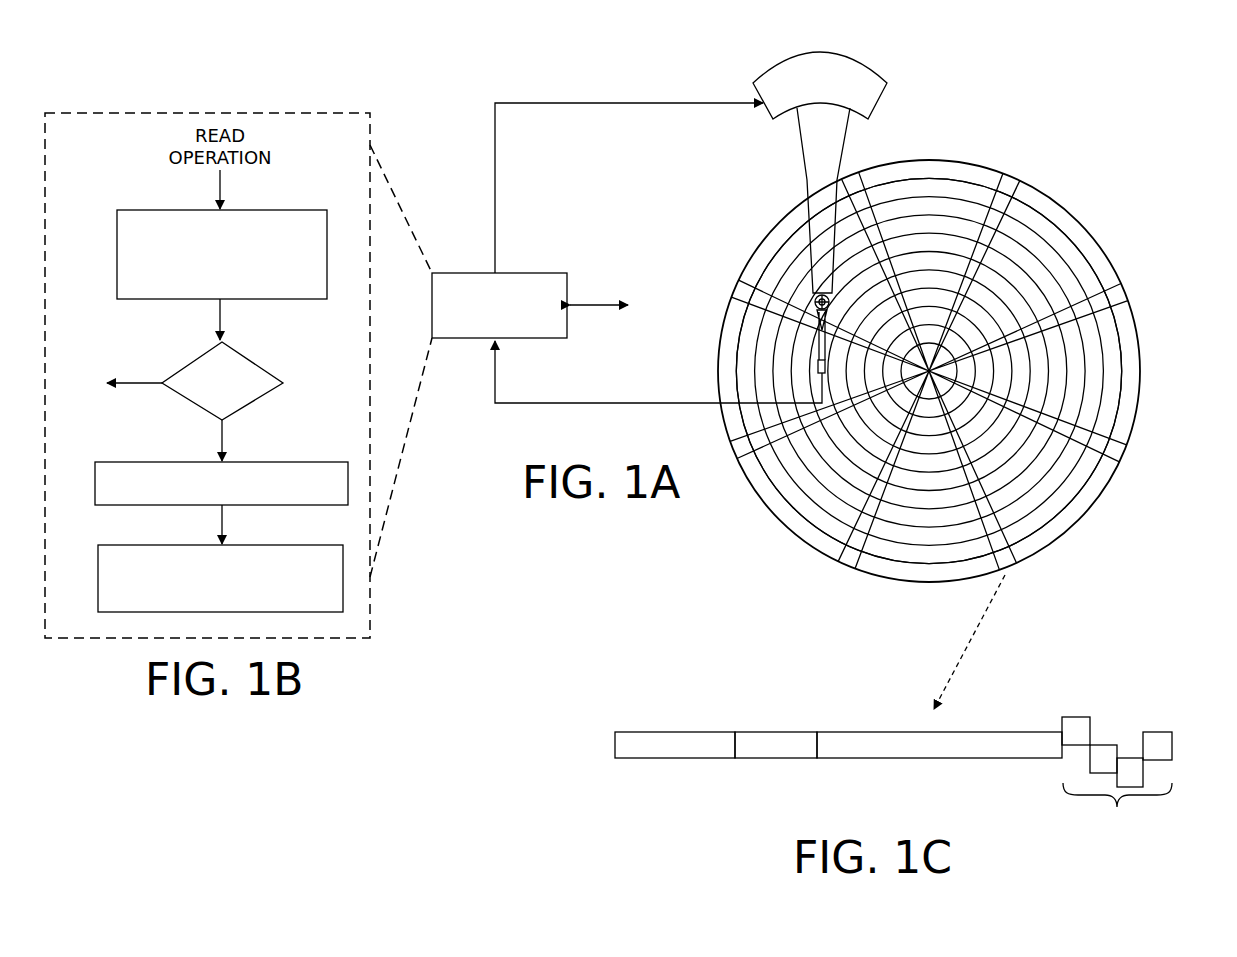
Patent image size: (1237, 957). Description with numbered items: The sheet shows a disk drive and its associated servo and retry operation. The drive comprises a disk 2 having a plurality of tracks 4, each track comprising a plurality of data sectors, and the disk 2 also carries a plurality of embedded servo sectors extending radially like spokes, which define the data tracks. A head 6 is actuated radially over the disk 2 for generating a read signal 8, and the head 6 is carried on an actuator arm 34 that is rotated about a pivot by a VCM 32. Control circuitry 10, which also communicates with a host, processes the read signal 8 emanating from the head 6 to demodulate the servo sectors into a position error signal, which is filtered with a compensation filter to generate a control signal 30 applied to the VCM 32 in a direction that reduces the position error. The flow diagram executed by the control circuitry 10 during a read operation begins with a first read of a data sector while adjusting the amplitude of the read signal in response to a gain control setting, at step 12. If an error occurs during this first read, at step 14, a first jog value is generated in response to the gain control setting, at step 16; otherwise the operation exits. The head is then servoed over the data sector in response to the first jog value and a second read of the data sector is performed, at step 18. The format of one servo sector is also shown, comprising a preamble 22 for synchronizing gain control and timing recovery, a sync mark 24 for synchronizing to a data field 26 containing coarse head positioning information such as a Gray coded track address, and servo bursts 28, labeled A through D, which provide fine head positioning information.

In FIG. 1A, the disk 2 is at (1077, 206).
In FIG. 1A, the tracks 4 is at (930, 185).
In FIG. 1A, the head 6 is at (813, 378).
In FIG. 1A, the read signal 8 is at (625, 405).
In FIG. 1A, the control circuitry 10 is at (535, 273).
In FIG. 1A, the control signal 30 is at (495, 174).
In FIG. 1A, the VCM 32 is at (767, 110).
In FIG. 1A, the actuator arm 34 is at (806, 188).
In FIG. 1B, the first read step 12 is at (293, 299).
In FIG. 1B, the error detection step 14 is at (262, 400).
In FIG. 1B, the jog value generation step 16 is at (305, 505).
In FIG. 1B, the second read step 18 is at (305, 612).
In FIG. 1C, the preamble 22 is at (665, 758).
In FIG. 1C, the sync mark 24 is at (773, 758).
In FIG. 1C, the data field 26 is at (937, 758).
In FIG. 1C, the servo bursts 28 is at (1132, 718).